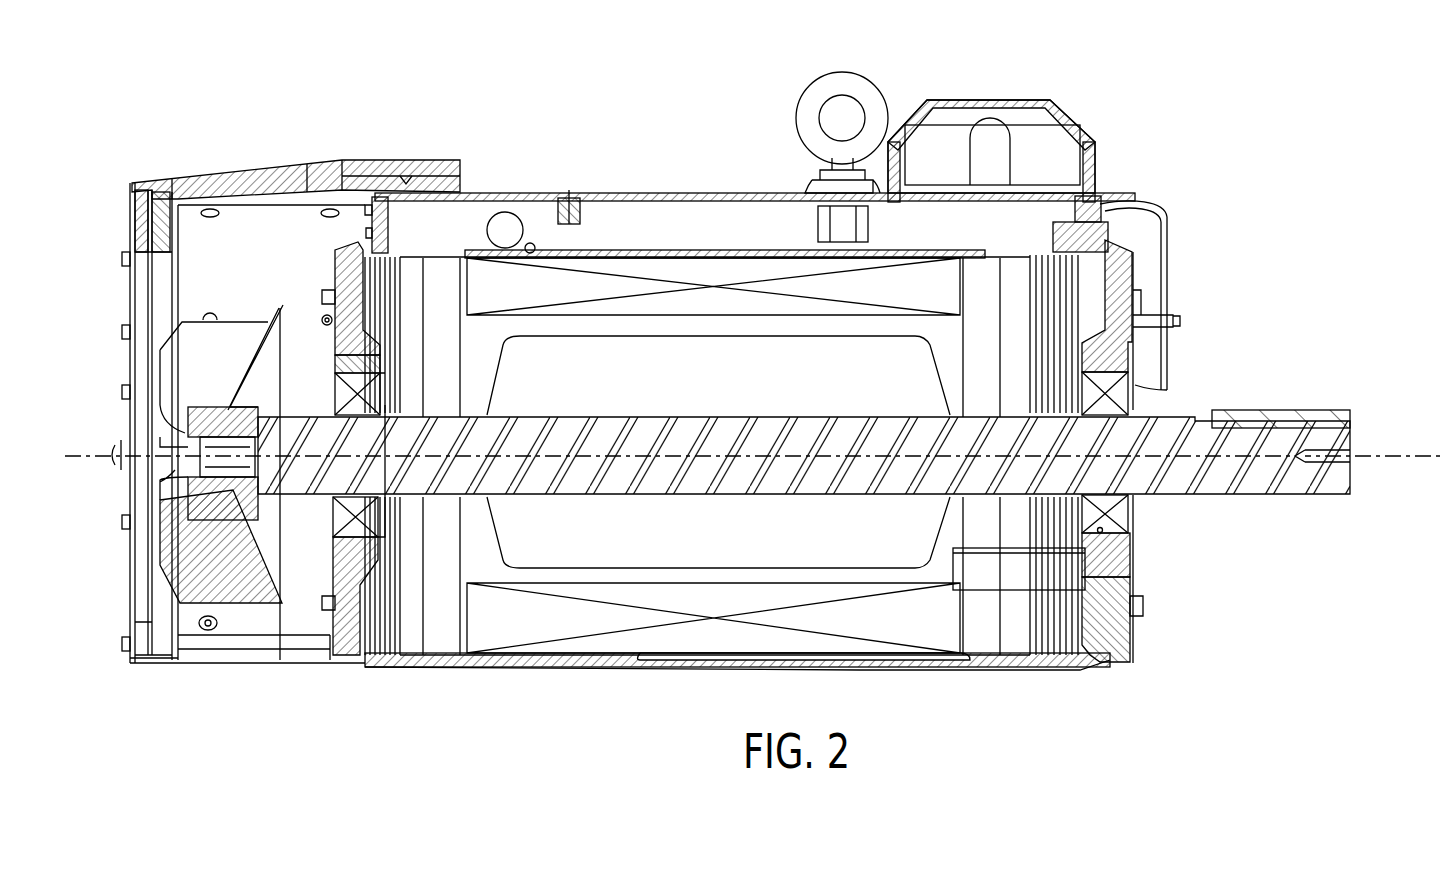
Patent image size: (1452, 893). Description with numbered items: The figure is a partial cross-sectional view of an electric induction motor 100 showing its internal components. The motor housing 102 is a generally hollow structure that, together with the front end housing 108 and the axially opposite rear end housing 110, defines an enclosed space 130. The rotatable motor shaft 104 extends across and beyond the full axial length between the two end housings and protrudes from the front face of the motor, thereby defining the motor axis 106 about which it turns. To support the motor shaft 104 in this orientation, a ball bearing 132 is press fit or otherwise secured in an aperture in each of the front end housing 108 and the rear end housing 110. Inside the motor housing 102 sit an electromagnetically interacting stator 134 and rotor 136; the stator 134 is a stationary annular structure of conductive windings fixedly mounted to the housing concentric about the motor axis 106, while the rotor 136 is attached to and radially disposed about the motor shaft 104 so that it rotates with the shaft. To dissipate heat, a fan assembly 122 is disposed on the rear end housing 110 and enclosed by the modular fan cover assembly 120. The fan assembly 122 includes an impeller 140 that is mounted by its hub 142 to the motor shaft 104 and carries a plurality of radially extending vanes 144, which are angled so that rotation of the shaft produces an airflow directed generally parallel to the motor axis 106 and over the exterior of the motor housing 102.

The electric induction motor 100 is at (752, 370).
The motor housing 102 is at (745, 196).
The motor shaft 104 is at (1297, 486).
The motor axis 106 is at (1398, 440).
The front end housing 108 is at (1122, 262).
The rear end housing 110 is at (333, 254).
The fan cover assembly 120 is at (277, 178).
The fan assembly 122 is at (233, 235).
The enclosed space 130 is at (990, 340).
The ball bearing 132 is at (337, 520).
The stator 134 is at (683, 266).
The rotor 136 is at (700, 548).
The impeller 140 is at (181, 426).
The hub 142 is at (196, 318).
The vanes 144 is at (245, 605).